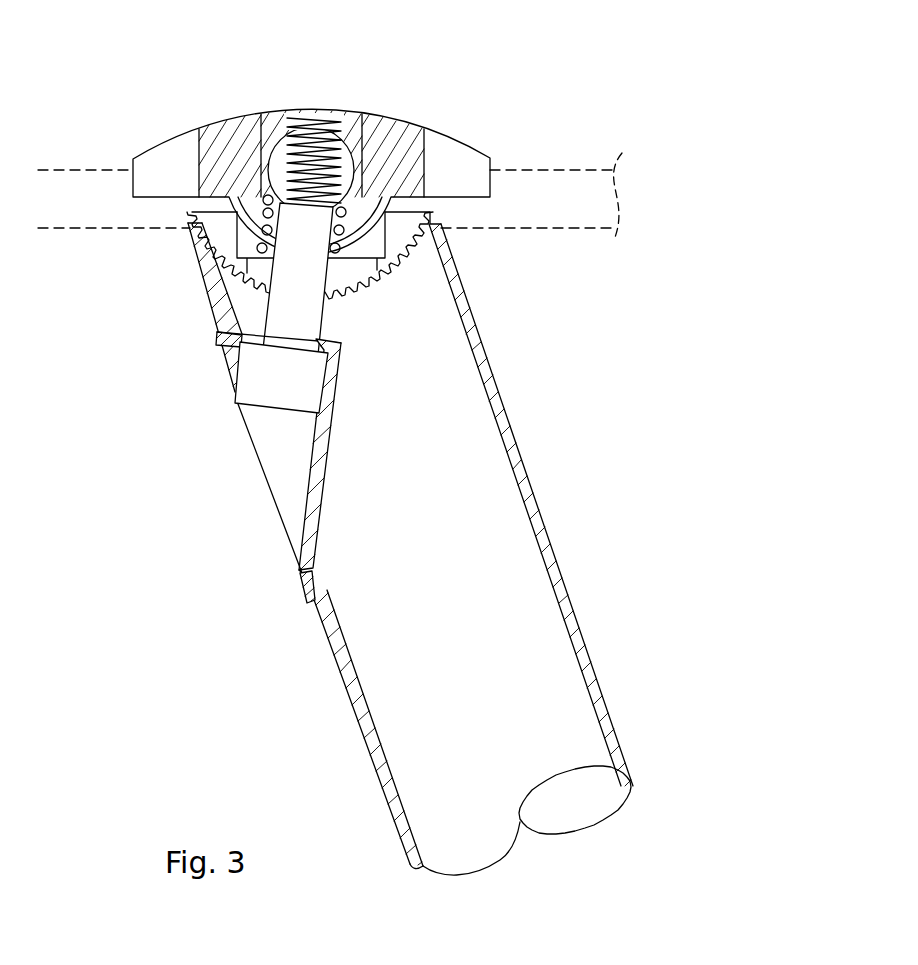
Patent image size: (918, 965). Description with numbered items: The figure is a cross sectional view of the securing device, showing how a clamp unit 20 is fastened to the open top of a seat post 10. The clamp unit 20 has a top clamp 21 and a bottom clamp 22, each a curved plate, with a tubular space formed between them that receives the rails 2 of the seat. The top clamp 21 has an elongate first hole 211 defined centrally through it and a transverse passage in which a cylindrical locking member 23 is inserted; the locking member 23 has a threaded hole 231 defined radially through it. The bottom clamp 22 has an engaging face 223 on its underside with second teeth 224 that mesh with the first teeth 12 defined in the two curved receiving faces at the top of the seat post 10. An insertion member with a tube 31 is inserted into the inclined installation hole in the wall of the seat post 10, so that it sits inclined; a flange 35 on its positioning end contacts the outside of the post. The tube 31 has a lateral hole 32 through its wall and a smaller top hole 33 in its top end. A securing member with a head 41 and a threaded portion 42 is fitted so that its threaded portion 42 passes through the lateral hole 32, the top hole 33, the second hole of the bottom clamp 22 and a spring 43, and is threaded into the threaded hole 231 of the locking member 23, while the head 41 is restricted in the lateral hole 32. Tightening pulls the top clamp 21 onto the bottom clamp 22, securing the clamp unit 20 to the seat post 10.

The rails 2 is at (552, 177).
The seat post 10 is at (508, 422).
The first teeth 12 is at (193, 238).
The clamp unit 20 is at (198, 425).
The top clamp 21 is at (325, 139).
The first hole 211 is at (350, 123).
The bottom clamp 22 is at (331, 272).
The engaging face 223 is at (420, 245).
The second teeth 224 is at (160, 245).
The locking member 23 is at (289, 143).
The threaded hole 231 is at (317, 130).
The tube 31 is at (332, 463).
The lateral hole 32 is at (270, 440).
The top hole 33 is at (268, 343).
The flange 35 is at (305, 595).
The head 41 is at (273, 398).
The threaded portion 42 is at (309, 131).
The spring 43 is at (213, 258).